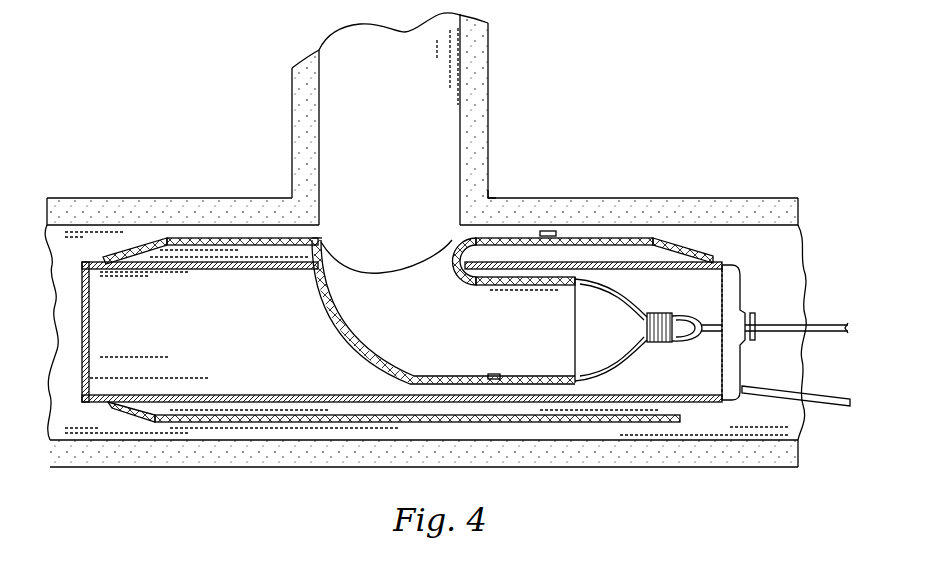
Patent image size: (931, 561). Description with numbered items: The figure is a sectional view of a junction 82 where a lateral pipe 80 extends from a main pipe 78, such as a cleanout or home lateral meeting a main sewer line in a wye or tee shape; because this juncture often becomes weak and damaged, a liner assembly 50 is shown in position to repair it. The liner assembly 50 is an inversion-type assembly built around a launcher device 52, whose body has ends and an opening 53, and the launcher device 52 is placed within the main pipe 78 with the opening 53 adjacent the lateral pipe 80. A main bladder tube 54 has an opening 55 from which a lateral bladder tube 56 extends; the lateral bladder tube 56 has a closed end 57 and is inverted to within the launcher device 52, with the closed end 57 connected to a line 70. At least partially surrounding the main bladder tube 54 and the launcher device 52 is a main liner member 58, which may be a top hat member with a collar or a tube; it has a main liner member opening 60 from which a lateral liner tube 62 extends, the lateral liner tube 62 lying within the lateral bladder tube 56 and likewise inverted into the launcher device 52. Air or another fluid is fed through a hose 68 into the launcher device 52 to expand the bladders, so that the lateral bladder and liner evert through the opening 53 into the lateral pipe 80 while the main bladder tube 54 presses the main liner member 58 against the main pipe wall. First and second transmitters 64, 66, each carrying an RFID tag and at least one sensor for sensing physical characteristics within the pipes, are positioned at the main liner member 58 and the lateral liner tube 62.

The liner assembly 50 is at (694, 242).
The launcher device 52 is at (82, 281).
The launcher device opening 53 is at (316, 268).
The main bladder tube 54 is at (147, 250).
The opening of the main bladder 55 is at (318, 242).
The lateral bladder tube 56 is at (370, 362).
The closed end 57 is at (633, 316).
The main liner member 58 is at (190, 240).
The main liner member opening 60 is at (322, 241).
The lateral liner tube 62 is at (525, 285).
The first transmitter 64 is at (552, 231).
The second transmitter 66 is at (495, 374).
The hose 68 is at (795, 393).
The line 70 is at (790, 325).
The main pipe 78 is at (708, 205).
The lateral pipe 80 is at (488, 107).
The junction 82 is at (488, 197).